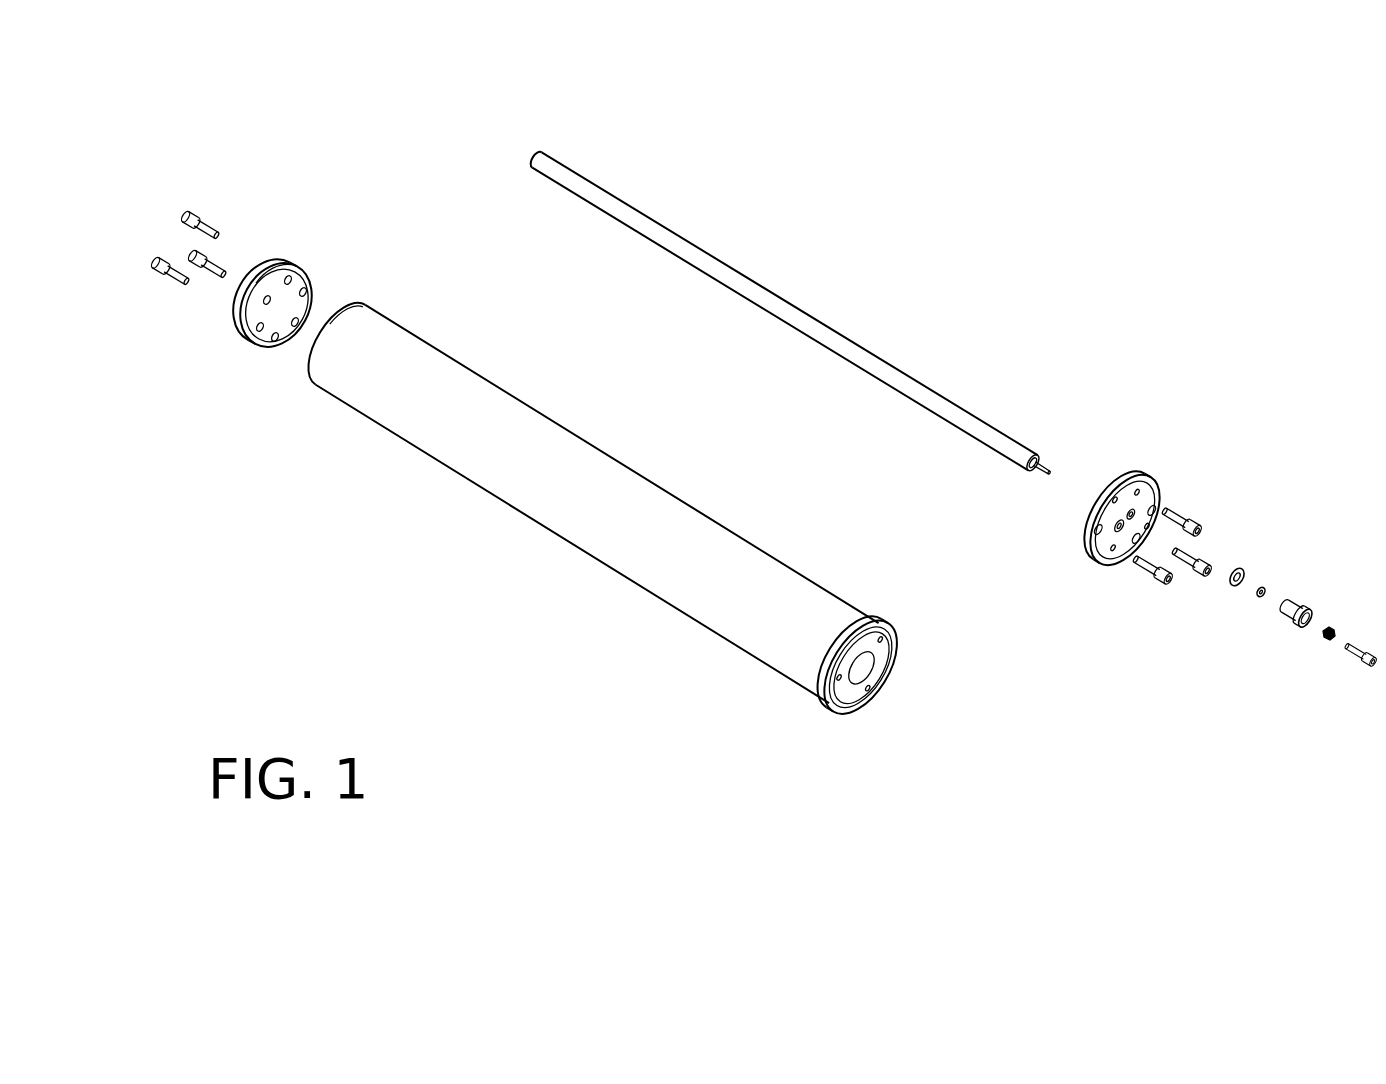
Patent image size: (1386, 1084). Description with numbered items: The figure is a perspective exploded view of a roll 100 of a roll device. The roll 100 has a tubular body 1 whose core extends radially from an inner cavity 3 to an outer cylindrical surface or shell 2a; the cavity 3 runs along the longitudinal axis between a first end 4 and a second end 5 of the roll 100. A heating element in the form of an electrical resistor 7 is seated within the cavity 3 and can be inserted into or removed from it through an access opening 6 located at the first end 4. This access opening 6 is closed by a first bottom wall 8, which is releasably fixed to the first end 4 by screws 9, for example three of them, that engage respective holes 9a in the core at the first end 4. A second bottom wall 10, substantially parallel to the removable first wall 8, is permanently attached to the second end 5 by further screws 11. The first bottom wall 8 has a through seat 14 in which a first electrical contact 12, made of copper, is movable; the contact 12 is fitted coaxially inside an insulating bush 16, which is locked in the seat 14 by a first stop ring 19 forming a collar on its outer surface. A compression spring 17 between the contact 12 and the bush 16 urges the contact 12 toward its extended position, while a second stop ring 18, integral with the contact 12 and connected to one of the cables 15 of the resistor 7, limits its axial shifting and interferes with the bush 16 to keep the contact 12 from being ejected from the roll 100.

The roll 100 is at (560, 595).
The tubular body 1 is at (507, 388).
The outer cylindrical surface or shell 2a is at (583, 458).
The cavity 3 is at (885, 680).
The first end 4 is at (862, 615).
The second end 5 is at (365, 308).
The access opening 6 is at (865, 662).
The heating element (electrical resistor) 7 is at (768, 298).
The first bottom wall 8 is at (1153, 472).
The screws 9 is at (1185, 510).
The holes 9a is at (843, 707).
The second bottom wall 10 is at (280, 258).
The further screws 11 is at (208, 220).
The first electrical contact 12 is at (1356, 662).
The through seat 14 is at (1137, 490).
The cables 15 is at (1066, 506).
The bush 16 is at (1305, 608).
The compression spring 17 is at (1326, 638).
The second stop ring 18 is at (1266, 588).
The first stop ring 19 is at (1240, 570).